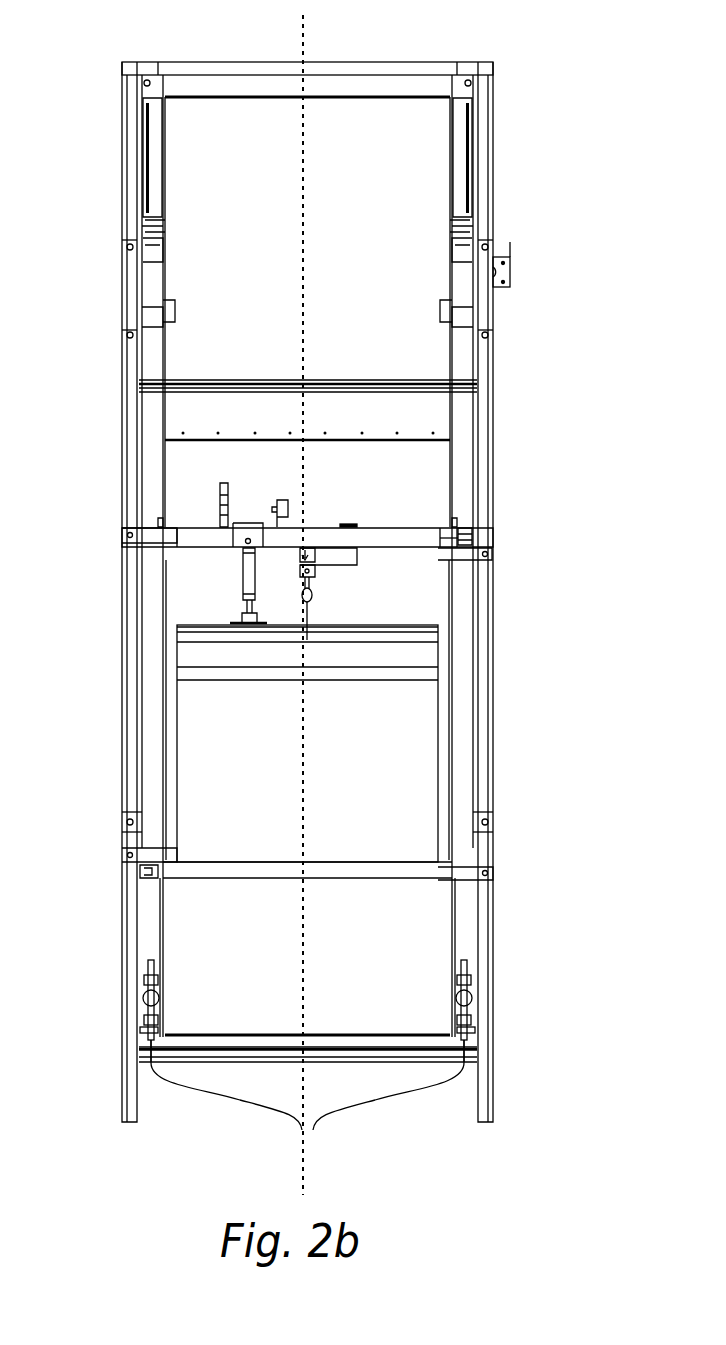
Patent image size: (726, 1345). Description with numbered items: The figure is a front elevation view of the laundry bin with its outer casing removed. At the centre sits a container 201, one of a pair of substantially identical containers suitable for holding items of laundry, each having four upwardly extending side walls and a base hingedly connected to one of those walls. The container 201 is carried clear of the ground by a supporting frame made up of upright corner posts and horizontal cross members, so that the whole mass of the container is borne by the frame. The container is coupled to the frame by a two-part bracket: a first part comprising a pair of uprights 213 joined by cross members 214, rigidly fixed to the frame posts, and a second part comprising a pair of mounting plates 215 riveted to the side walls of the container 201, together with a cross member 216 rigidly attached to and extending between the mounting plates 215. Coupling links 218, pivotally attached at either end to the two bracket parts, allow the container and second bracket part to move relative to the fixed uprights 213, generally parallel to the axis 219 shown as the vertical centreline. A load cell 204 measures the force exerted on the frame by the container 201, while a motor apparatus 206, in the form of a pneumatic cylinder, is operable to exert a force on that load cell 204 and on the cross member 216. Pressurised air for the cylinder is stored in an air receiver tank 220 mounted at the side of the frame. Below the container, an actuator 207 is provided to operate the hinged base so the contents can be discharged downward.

The container 201 is at (324, 781).
The first load cell 204 is at (348, 557).
The motor apparatus 206 is at (250, 580).
The actuator 207 is at (307, 1101).
The uprights 213 is at (167, 742).
The cross members 214 is at (463, 538).
The mounting plates 215 is at (158, 522).
The cross member 216 is at (433, 632).
The coupling links 218 is at (137, 545).
The axis 219 is at (307, 50).
The air receiver tank 220 is at (512, 272).